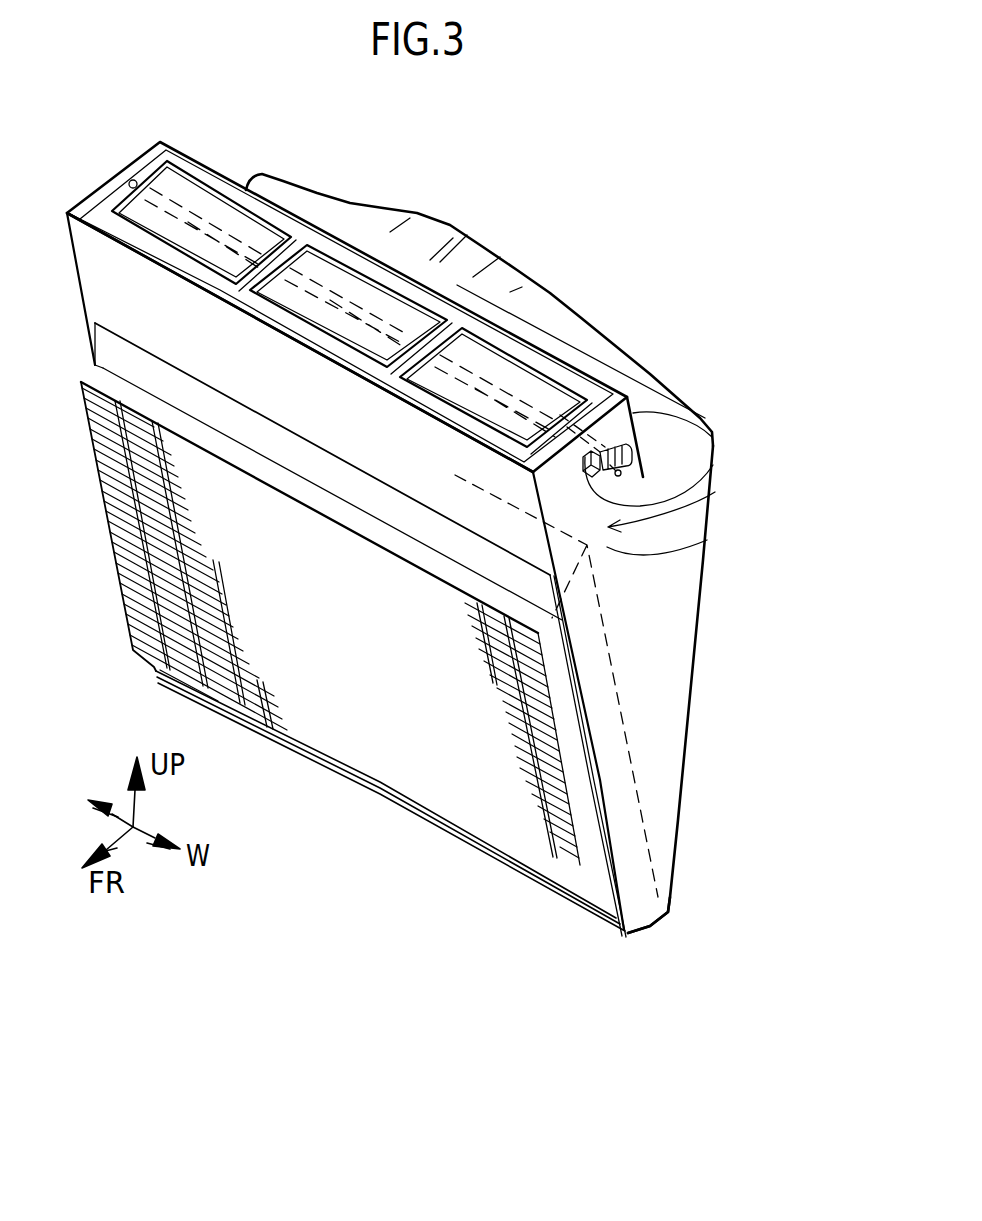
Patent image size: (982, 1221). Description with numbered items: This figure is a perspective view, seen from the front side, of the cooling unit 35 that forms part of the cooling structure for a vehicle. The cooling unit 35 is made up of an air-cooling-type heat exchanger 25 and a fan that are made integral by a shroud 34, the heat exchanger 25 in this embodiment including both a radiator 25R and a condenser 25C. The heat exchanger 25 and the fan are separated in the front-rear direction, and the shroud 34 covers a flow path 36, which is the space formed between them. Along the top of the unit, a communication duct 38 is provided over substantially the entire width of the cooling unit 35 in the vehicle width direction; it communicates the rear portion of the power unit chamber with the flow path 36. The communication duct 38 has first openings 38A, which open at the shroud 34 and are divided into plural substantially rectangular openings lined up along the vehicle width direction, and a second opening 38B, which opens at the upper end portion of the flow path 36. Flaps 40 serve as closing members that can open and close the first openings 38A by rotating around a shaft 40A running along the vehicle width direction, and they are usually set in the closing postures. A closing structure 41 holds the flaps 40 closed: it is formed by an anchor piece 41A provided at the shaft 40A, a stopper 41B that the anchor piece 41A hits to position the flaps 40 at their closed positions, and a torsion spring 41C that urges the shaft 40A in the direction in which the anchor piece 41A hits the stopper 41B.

The air-cooling-type heat exchanger 25 is at (523, 947).
The condenser 25C is at (593, 850).
The radiator 25R is at (630, 858).
The shroud 34 is at (669, 603).
The cooling unit 35 is at (623, 204).
The flow path 36 is at (610, 747).
The communication duct 38 is at (707, 482).
The first openings 38A is at (272, 239).
The second opening 38B is at (683, 543).
The flaps 40 is at (203, 203).
The shaft 40A is at (507, 390).
The closing structure 41 is at (706, 395).
The anchor piece 41A is at (660, 422).
The stopper 41B is at (700, 436).
The torsion spring 41C is at (640, 452).